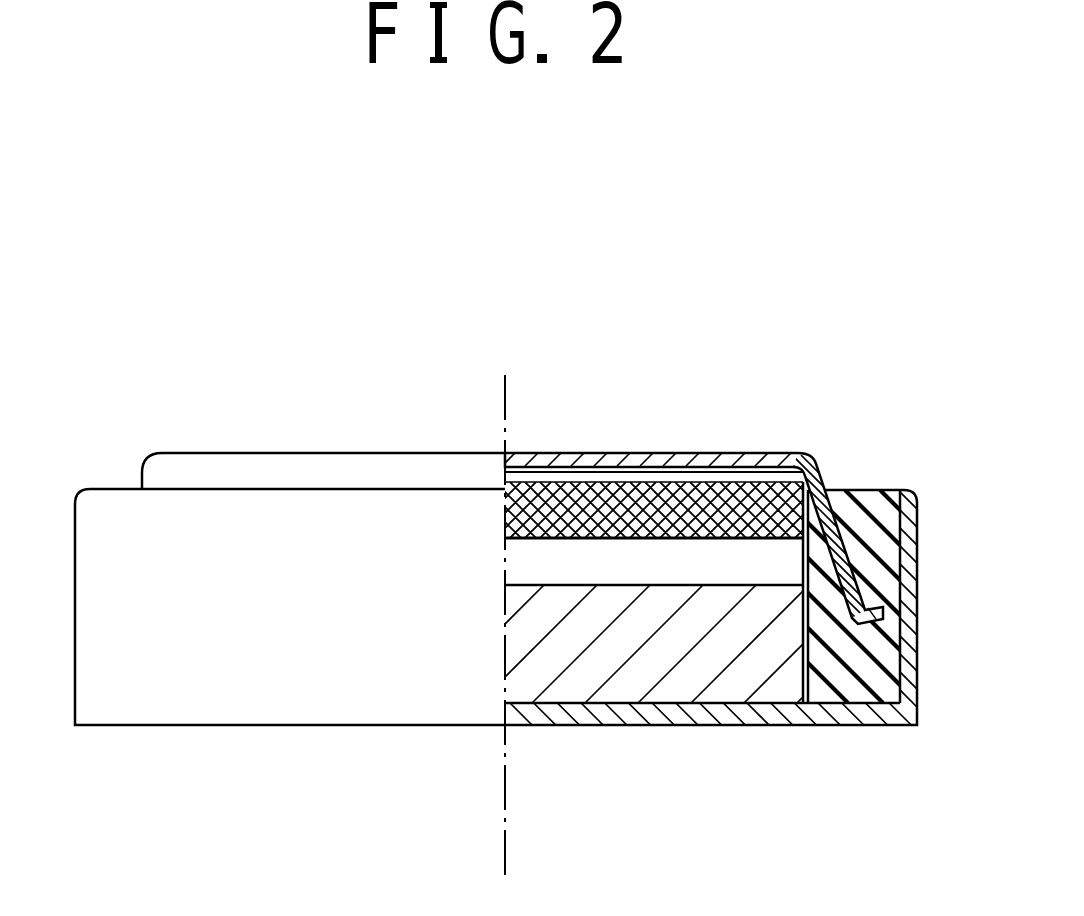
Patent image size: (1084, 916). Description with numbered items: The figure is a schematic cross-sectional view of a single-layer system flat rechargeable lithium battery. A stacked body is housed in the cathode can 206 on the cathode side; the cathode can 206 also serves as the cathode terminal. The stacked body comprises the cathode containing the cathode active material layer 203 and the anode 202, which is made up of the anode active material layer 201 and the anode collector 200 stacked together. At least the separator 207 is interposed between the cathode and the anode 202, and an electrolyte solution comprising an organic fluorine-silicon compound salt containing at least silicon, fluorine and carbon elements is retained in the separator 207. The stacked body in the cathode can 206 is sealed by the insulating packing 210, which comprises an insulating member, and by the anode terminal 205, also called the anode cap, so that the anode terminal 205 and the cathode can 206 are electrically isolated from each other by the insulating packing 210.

The anode collector 200 is at (675, 472).
The anode active material layer 201 is at (761, 497).
The anode 202 is at (650, 355).
The cathode active material layer 203 is at (715, 680).
The anode terminal 205 is at (578, 453).
The cathode can 206 is at (840, 720).
The separator 207 is at (613, 570).
The insulating packing 210 is at (876, 490).